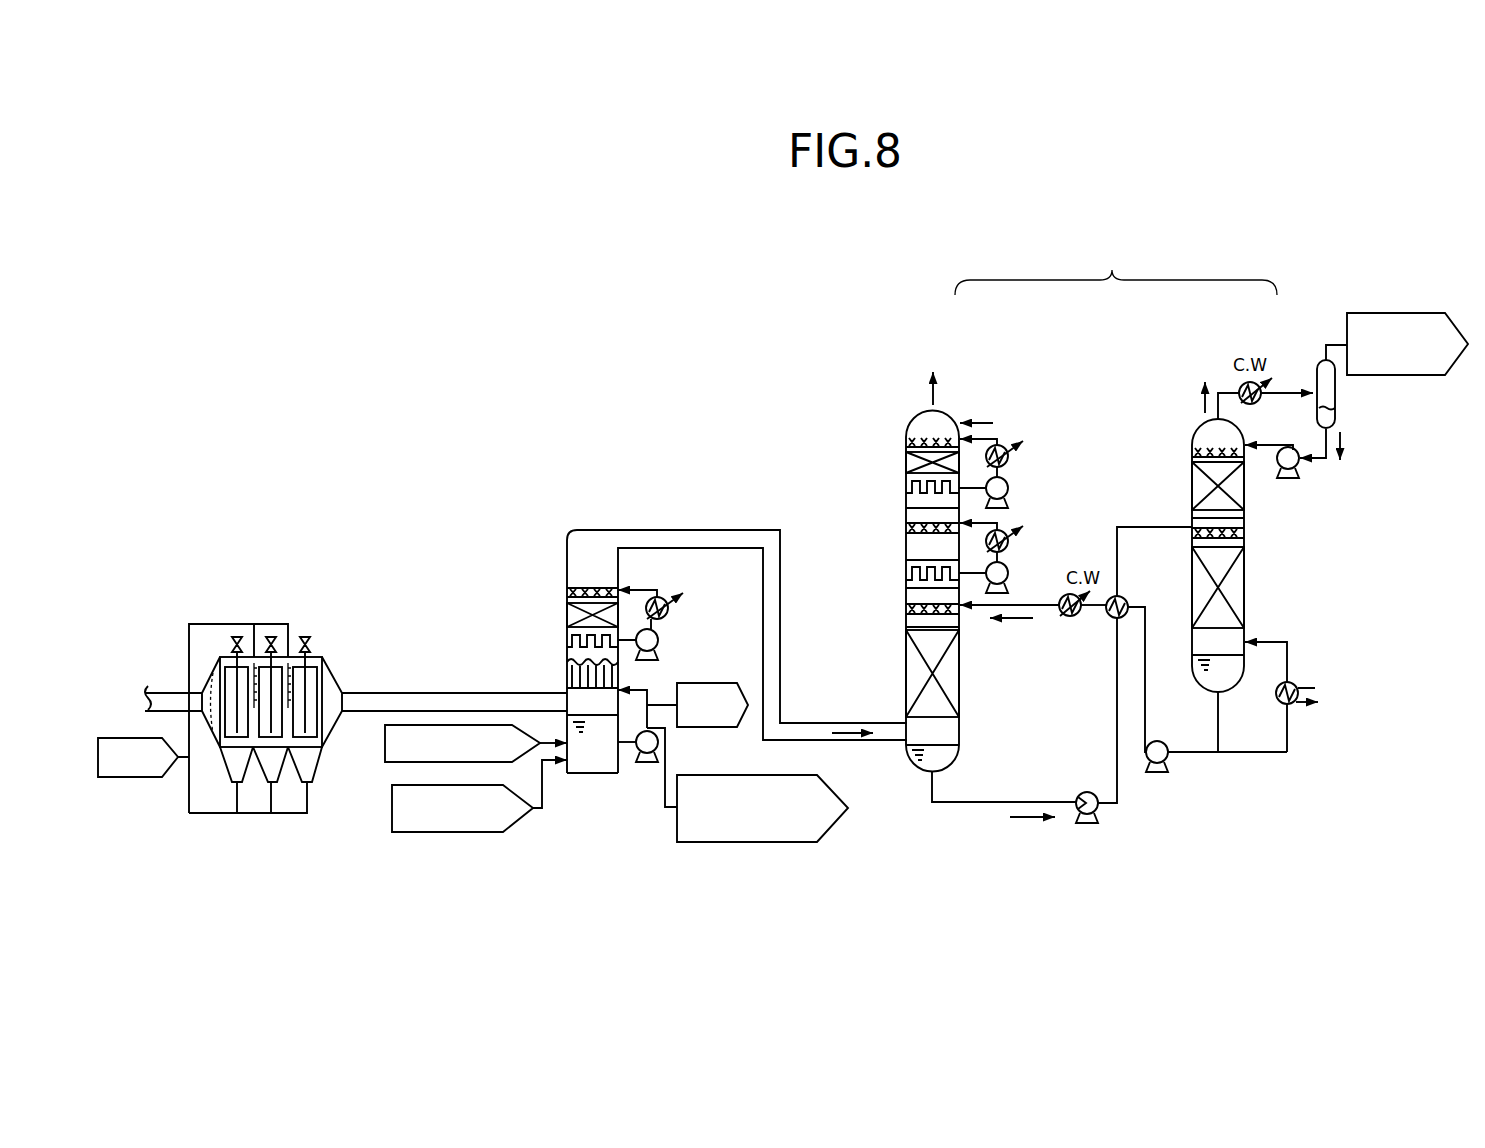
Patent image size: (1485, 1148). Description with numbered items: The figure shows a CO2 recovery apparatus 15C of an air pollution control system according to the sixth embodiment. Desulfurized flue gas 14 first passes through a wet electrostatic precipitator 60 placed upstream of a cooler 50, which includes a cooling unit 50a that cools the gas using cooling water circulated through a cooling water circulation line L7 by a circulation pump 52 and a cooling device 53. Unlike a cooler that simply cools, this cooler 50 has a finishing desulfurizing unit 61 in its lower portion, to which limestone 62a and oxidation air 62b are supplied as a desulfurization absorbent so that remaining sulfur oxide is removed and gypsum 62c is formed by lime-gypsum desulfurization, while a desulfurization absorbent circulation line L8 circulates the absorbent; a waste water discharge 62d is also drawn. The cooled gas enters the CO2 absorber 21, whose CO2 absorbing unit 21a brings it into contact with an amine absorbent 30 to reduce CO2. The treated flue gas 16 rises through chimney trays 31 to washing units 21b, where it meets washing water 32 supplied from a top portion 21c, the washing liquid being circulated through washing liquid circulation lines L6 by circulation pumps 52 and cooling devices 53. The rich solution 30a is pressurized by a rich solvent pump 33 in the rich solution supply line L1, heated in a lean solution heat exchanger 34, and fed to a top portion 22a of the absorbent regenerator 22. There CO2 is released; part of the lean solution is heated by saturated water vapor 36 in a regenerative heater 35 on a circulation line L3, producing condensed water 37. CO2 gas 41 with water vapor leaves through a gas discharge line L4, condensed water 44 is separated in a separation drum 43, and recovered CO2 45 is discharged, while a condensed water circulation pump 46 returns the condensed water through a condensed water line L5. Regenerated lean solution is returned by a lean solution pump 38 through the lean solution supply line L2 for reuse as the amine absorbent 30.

The wet electrostatic precipitator 60 is at (240, 608).
The limestone 62a is at (385, 752).
The oxidation air 62b is at (392, 808).
The gypsum 62c is at (720, 683).
The desulfurized waste water discharge 62d is at (710, 775).
The cooler 50 is at (590, 516).
The cooling unit 50a is at (565, 615).
The finishing desulfurizing unit 61 is at (565, 682).
The circulation pump 52 is at (662, 642).
The cooling device 53 is at (672, 612).
The cooling water circulation line L7 is at (645, 586).
The desulfurization absorbent circulation line L8 is at (640, 690).
The desulfurized flue gas 14 is at (848, 742).
The CO2 recovery apparatus 15C is at (1116, 260).
The treated flue gas 16 is at (930, 397).
The CO2 absorber 21 is at (1012, 383).
The CO2 absorbing unit 21a is at (906, 662).
The washing unit 21b is at (906, 462).
The top portion of washing unit 21c is at (947, 414).
The chimney tray 31 is at (906, 488).
The washing water 32 is at (980, 423).
The amine absorbent 30 is at (1022, 624).
The rich solution 30a is at (1035, 822).
The rich solvent pump 33 is at (1087, 792).
The lean solution heat exchanger 34 is at (1126, 599).
The rich solution supply line L1 is at (962, 806).
The lean solution supply line L2 is at (1145, 720).
The circulation line L3 is at (1255, 756).
The gas discharge line L4 is at (1291, 390).
The condensed water line L5 is at (1265, 452).
The washing liquid circulation line L6 is at (1000, 437).
The absorbent regenerator 22 is at (1162, 371).
The top portion of absorbent regenerator 22a is at (1192, 445).
The CO2 gas 41 is at (1200, 405).
The separation drum 43 is at (1338, 397).
The condensed water 44 is at (1346, 444).
The recovered CO2 45 is at (1383, 313).
The condensed water circulation pump 46 is at (1292, 480).
The regenerative heater 35 is at (1292, 664).
The saturated water vapor 36 is at (1308, 688).
The condensed water 37 is at (1300, 706).
The lean solution pump 38 is at (1165, 743).